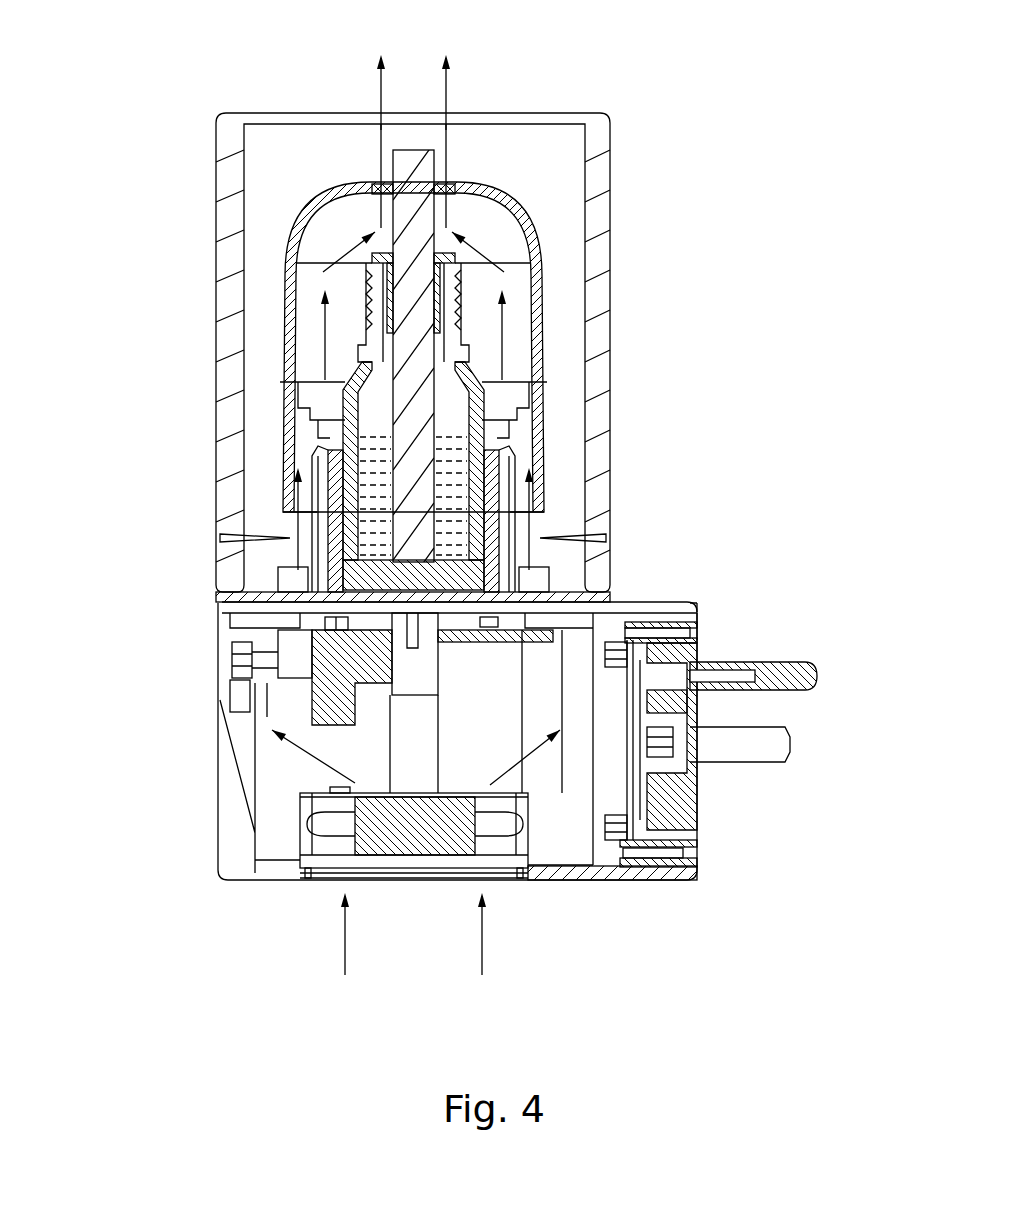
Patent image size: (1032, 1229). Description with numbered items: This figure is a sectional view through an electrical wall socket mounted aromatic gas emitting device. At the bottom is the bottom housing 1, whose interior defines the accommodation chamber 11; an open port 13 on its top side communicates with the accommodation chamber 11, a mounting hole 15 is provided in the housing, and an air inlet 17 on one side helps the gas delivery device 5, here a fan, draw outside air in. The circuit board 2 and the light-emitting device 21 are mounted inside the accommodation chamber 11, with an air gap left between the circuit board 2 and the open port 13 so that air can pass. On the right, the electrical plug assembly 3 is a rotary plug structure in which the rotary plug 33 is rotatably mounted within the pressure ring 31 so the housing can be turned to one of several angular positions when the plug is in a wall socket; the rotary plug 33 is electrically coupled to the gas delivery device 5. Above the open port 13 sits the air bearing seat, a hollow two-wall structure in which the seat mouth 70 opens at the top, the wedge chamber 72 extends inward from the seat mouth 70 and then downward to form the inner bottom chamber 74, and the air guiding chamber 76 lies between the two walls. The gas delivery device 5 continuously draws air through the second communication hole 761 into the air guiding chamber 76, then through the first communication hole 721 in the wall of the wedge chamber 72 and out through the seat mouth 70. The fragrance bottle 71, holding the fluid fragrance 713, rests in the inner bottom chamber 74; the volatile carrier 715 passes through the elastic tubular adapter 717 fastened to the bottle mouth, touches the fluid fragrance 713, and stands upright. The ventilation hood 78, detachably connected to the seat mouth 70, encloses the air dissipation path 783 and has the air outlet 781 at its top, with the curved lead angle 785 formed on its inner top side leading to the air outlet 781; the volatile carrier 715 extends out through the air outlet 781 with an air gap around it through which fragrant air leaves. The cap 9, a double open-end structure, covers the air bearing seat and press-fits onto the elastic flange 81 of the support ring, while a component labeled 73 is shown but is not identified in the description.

The bottom housing 1 is at (217, 807).
The accommodation chamber 11 is at (278, 779).
The open port 13 is at (377, 608).
The mounting hole 15 is at (697, 620).
The air inlet 17 is at (508, 896).
The circuit board 2 is at (590, 622).
The light-emitting device 21 is at (525, 608).
The electrical plug assembly 3 is at (698, 807).
The pressure ring 31 is at (670, 872).
The rotary plug 33 is at (663, 678).
The gas delivery device 5 is at (473, 798).
The seat mouth 70 is at (550, 355).
The fragrance bottle 71 is at (330, 462).
The fluid fragrance 713 is at (453, 532).
The volatile carrier 715 is at (406, 172).
The tubular adapter 717 is at (437, 300).
The wedge chamber 72 is at (310, 393).
The first communication hole 721 is at (315, 435).
The support plate 73 is at (220, 598).
The inner bottom chamber 74 is at (533, 458).
The air guiding chamber 76 is at (303, 505).
The second communication hole 761 is at (310, 563).
The ventilation hood 78 is at (283, 285).
The air outlet 781 is at (452, 168).
The air dissipation path 783 is at (343, 250).
The curved lead angle 785 is at (515, 185).
The flange 81 is at (270, 540).
The cap 9 is at (600, 143).